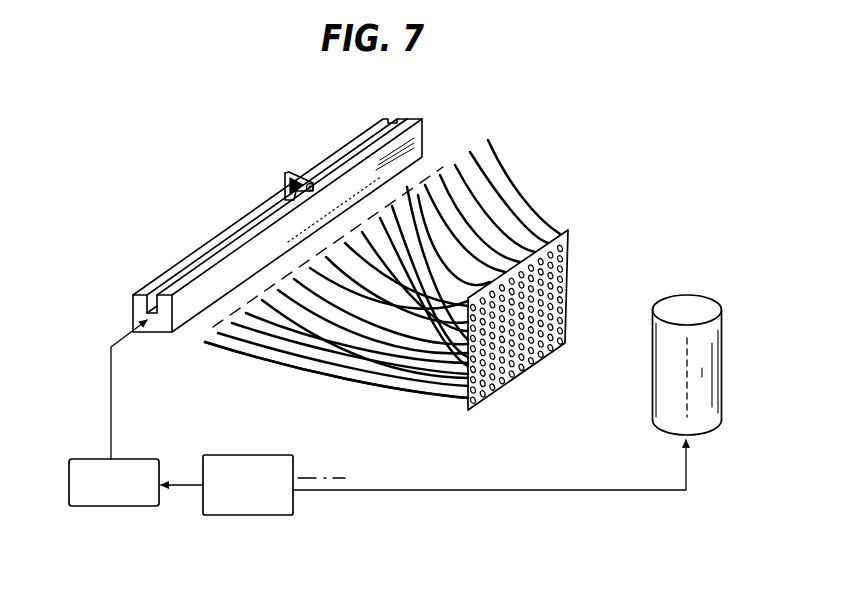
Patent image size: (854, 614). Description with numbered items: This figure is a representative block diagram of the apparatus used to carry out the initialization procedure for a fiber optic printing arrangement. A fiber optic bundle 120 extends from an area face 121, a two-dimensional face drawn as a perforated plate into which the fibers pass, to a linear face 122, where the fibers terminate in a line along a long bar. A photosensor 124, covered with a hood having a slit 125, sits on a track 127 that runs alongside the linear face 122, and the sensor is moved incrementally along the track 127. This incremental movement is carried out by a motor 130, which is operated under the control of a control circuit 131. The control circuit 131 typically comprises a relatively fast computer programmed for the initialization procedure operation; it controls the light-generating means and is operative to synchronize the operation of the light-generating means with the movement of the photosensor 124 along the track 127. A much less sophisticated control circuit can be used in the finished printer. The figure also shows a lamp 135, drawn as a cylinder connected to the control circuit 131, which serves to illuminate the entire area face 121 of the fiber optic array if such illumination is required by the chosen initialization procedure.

The fiber optic bundle 120 is at (352, 402).
The area face 121 is at (567, 290).
The linear face 122 is at (216, 341).
The photosensor 124 is at (291, 172).
The slit 125 is at (318, 191).
The track 127 is at (424, 136).
The motor 130 is at (135, 505).
The control circuit 131 is at (246, 507).
The lamp 135 is at (723, 337).